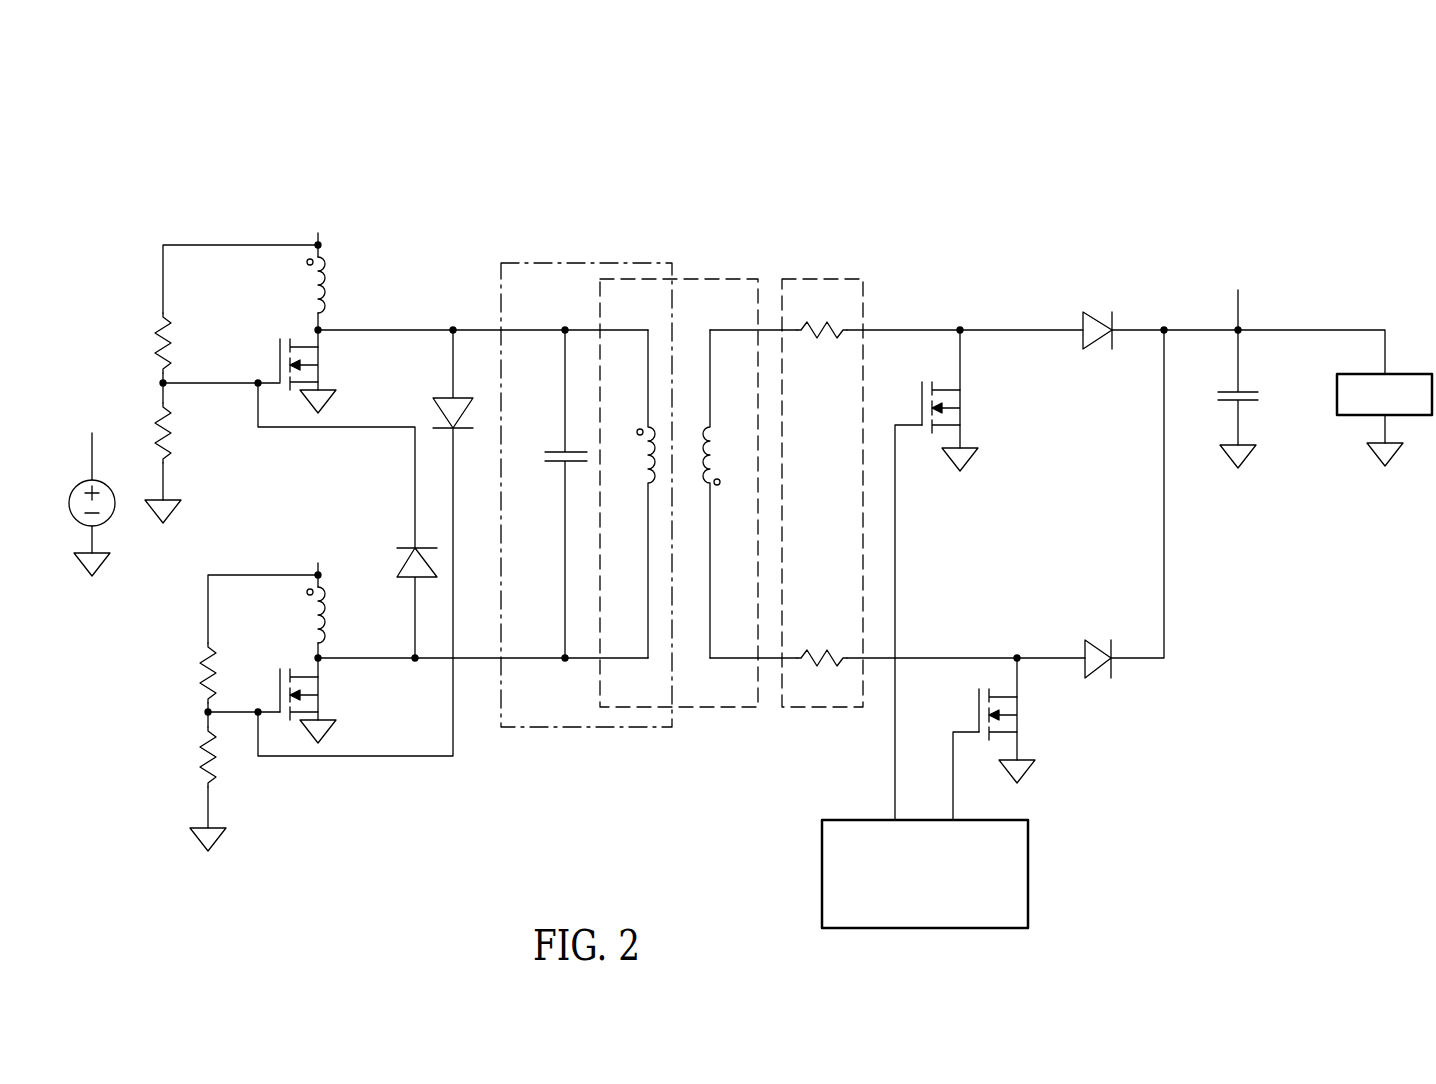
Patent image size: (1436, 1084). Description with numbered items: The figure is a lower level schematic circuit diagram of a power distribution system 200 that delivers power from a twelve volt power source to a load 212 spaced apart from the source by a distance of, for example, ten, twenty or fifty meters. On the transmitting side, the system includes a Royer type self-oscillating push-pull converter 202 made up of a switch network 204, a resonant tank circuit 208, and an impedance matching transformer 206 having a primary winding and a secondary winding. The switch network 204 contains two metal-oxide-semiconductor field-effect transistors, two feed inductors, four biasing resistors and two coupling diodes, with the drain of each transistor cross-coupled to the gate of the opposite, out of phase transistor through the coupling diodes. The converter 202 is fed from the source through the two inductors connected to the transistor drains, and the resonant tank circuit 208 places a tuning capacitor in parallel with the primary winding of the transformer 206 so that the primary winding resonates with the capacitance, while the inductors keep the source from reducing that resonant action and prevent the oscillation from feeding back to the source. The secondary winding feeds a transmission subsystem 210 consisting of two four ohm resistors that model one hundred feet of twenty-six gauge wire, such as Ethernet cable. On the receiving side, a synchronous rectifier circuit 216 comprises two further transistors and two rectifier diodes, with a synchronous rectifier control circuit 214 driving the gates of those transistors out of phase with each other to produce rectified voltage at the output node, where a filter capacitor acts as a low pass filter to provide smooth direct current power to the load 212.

The power distribution system 200 is at (1200, 90).
The Royer type self-oscillating push-pull converter 202 is at (413, 110).
The switch network 204 is at (372, 272).
The impedance matching transformer 206 is at (690, 279).
The resonant tank circuit 208 is at (583, 263).
The transmission subsystem 210 is at (832, 279).
The load 212 is at (1408, 374).
The synchronous rectifier control circuit 214 is at (822, 860).
The synchronous rectifier circuit 216 is at (1045, 275).